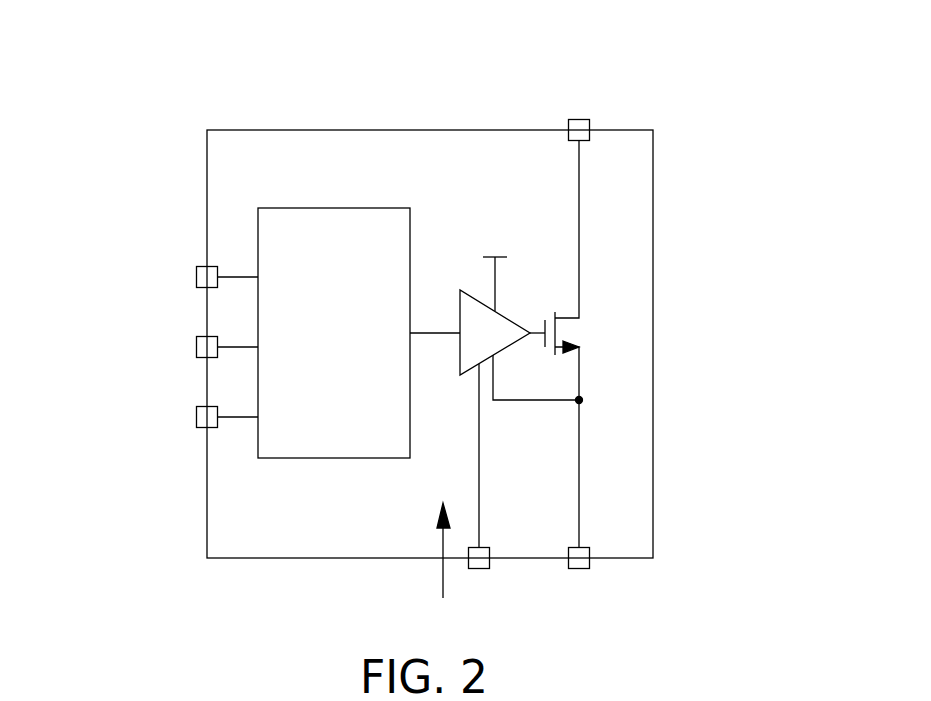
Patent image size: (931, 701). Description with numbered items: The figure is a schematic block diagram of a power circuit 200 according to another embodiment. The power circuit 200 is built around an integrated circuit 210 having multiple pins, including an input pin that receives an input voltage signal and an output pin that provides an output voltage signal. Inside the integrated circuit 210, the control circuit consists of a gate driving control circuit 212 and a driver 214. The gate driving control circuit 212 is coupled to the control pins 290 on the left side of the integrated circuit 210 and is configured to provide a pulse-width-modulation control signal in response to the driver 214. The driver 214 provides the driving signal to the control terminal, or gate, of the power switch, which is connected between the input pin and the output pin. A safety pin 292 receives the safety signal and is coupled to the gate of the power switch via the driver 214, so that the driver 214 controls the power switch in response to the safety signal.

The power circuit 200 is at (816, 37).
The integrated circuit 210 is at (470, 130).
The gate driving control circuit 212 is at (334, 208).
The driver 214 is at (465, 377).
The control pins 290 is at (177, 263).
The safety pin 292 is at (465, 578).